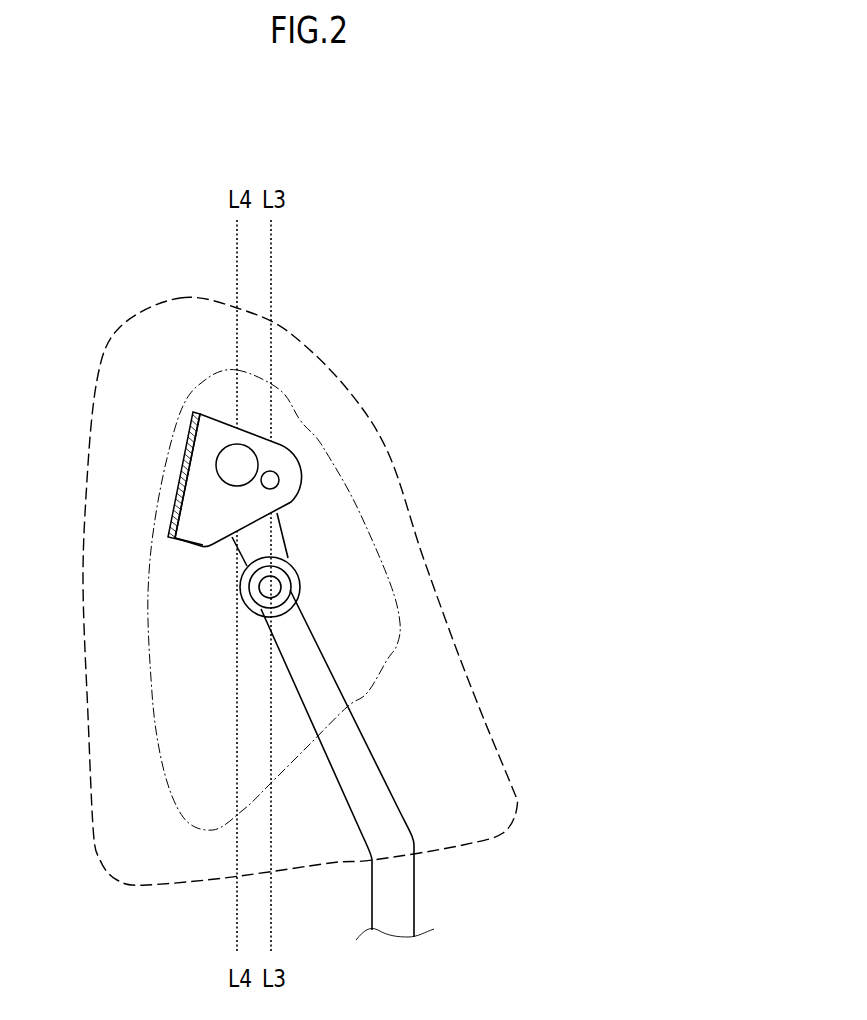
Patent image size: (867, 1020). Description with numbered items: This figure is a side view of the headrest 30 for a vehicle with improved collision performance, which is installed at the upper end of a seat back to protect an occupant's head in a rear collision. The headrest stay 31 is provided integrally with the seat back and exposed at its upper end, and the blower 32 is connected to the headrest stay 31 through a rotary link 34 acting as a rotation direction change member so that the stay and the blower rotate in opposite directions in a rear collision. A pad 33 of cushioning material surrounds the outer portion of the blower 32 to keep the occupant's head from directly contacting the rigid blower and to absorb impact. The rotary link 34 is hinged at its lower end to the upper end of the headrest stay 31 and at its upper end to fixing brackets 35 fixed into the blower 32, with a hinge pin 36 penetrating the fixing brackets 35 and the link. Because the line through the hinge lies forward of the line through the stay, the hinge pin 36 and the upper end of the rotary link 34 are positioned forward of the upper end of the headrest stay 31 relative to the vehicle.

The headrest 30 is at (443, 246).
The headrest stay 31 is at (402, 894).
The blower 32 is at (396, 600).
The pad 33 is at (389, 457).
The rotary link 34 is at (241, 546).
The fixing brackets 35 is at (202, 502).
The hinge pin 36 is at (250, 457).